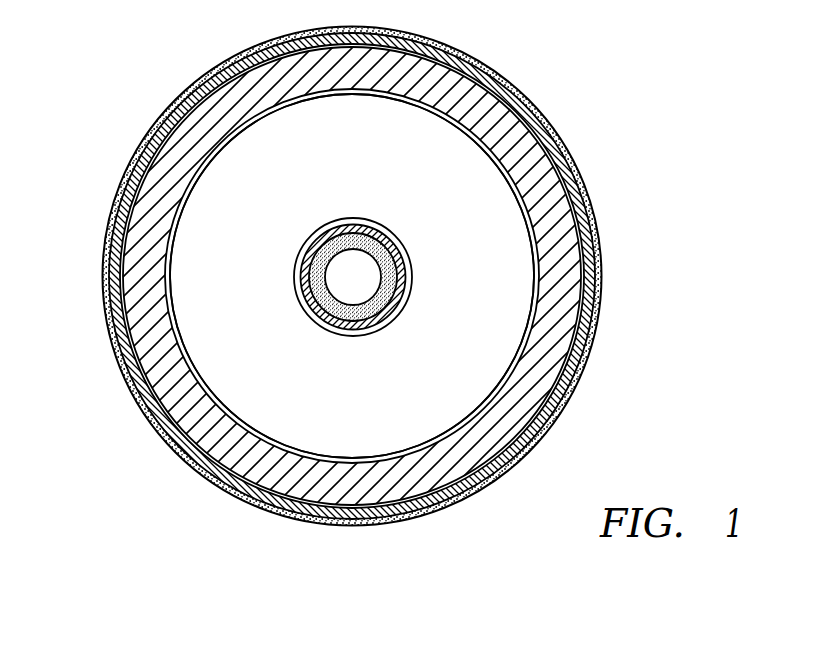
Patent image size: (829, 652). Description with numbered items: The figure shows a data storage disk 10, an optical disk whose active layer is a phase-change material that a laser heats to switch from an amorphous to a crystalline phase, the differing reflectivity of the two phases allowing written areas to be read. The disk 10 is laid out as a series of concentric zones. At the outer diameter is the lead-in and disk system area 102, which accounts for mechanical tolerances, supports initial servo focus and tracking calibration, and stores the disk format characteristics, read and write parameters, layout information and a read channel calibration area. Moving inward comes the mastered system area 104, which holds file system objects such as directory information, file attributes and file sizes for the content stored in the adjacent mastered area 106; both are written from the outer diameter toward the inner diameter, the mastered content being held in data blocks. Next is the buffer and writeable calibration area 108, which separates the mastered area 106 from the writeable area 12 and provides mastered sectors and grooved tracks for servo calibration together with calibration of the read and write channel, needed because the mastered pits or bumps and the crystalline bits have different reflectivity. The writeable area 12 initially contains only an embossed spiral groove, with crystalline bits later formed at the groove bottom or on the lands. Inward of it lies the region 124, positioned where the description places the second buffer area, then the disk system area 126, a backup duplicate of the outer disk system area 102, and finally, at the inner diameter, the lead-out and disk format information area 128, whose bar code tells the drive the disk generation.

The data storage disk 10 is at (383, 266).
The writeable area 12 is at (497, 317).
The lead-in and disk system area 102 is at (567, 167).
The mastered system area 104 is at (575, 200).
The mastered area 106 is at (565, 233).
The buffer and writeable calibration area 108 is at (540, 287).
The core outer jacket 124 is at (295, 305).
The disk system area 126 is at (300, 280).
The lead-out and disk format information area 128 is at (307, 260).